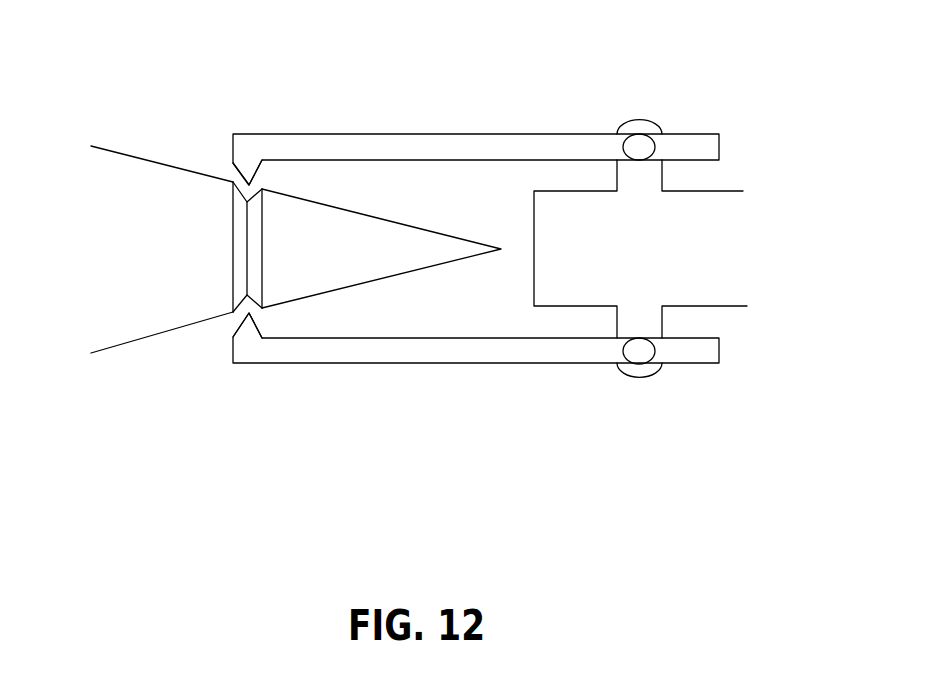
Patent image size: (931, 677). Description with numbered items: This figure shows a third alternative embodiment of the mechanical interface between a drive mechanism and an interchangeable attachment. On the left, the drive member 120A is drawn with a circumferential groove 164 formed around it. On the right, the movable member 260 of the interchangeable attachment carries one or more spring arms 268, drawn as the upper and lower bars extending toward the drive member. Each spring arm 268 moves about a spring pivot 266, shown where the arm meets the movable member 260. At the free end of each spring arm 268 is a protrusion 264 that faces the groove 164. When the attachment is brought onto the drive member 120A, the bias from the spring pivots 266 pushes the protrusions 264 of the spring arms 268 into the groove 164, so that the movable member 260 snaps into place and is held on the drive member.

The drive member 120A is at (138, 157).
The circumferential groove 164 is at (240, 253).
The protrusions 264 is at (233, 172).
The spring arms 268 is at (397, 134).
The spring pivots 266 is at (655, 146).
The movable member 260 is at (725, 191).